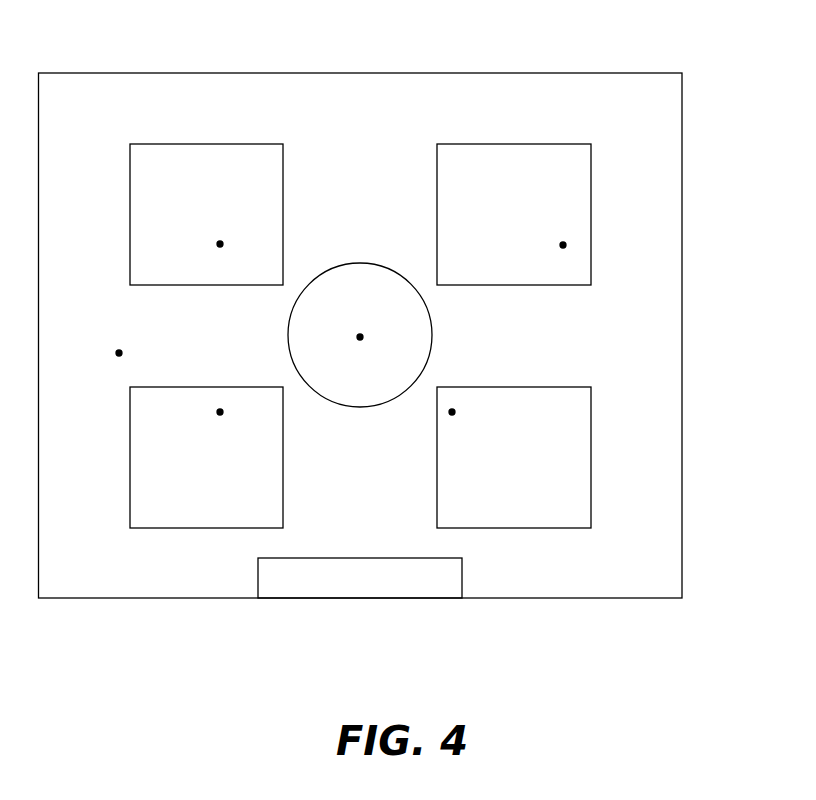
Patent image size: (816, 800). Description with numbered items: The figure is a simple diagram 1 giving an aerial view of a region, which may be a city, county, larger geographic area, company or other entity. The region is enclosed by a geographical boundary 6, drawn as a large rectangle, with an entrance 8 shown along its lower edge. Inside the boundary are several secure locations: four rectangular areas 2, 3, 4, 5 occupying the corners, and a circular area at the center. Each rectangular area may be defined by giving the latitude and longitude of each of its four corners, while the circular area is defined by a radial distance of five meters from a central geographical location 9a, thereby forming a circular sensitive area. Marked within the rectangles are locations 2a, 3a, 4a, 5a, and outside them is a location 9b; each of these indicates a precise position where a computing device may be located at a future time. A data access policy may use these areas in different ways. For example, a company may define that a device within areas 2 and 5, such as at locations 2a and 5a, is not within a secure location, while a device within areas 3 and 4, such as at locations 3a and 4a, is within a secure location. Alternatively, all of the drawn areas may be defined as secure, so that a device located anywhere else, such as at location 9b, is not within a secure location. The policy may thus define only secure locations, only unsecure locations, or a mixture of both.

The simple diagram 1 is at (160, 675).
The area 2 is at (249, 175).
The location 2a is at (217, 241).
The area 3 is at (552, 175).
The location 3a is at (560, 244).
The area 4 is at (249, 422).
The location 4a is at (217, 414).
The area 5 is at (552, 422).
The location 5a is at (455, 415).
The geographical boundary 6 is at (486, 73).
The entrance 8 is at (427, 598).
The geographical location 9a is at (360, 340).
The location 9b is at (122, 352).